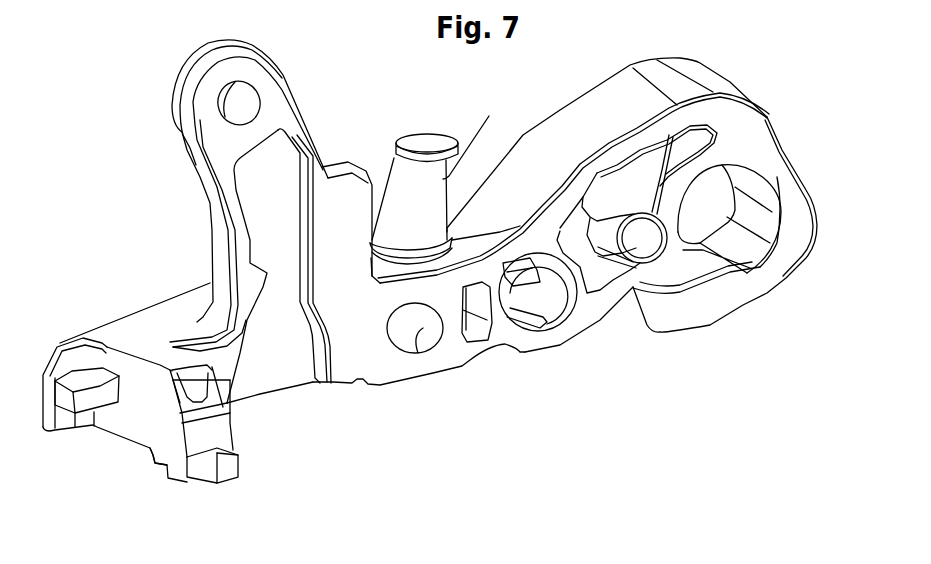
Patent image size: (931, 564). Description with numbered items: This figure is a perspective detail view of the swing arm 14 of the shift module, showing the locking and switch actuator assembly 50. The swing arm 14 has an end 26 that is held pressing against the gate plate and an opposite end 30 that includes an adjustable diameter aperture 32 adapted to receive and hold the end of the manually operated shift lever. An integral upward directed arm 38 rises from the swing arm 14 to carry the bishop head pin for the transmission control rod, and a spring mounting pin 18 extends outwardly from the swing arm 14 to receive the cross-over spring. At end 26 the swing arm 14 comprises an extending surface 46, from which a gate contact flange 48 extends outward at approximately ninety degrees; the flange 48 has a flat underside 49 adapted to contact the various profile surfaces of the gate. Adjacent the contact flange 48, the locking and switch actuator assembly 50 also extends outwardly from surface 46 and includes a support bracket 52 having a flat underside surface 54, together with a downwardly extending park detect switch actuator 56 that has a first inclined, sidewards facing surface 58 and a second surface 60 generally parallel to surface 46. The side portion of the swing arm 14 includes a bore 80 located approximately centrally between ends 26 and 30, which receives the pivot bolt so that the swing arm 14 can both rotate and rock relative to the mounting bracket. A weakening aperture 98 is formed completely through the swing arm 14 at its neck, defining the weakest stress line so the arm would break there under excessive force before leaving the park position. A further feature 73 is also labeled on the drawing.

The swing arm 14 is at (628, 58).
The spring mounting pin 18 is at (489, 116).
The end of swing arm 26 is at (100, 312).
The end of swing arm 30 is at (767, 117).
The adjustable diameter aperture 32 is at (740, 243).
The upward directed arm 38 is at (292, 92).
The extending surface 46 is at (87, 347).
The gate contact flange 48 is at (58, 415).
The flat underside 49 is at (107, 413).
The locking and switch actuator assembly 50 is at (266, 428).
The support bracket 52 is at (138, 427).
The flat underside surface 54 is at (141, 430).
The park detect switch actuator 56 is at (198, 483).
The first inclined, sidewards facing surface 58 is at (213, 485).
The second surface 60 is at (240, 467).
The window 73 is at (372, 363).
The bore 80 is at (417, 352).
The weakening aperture 98 is at (553, 303).